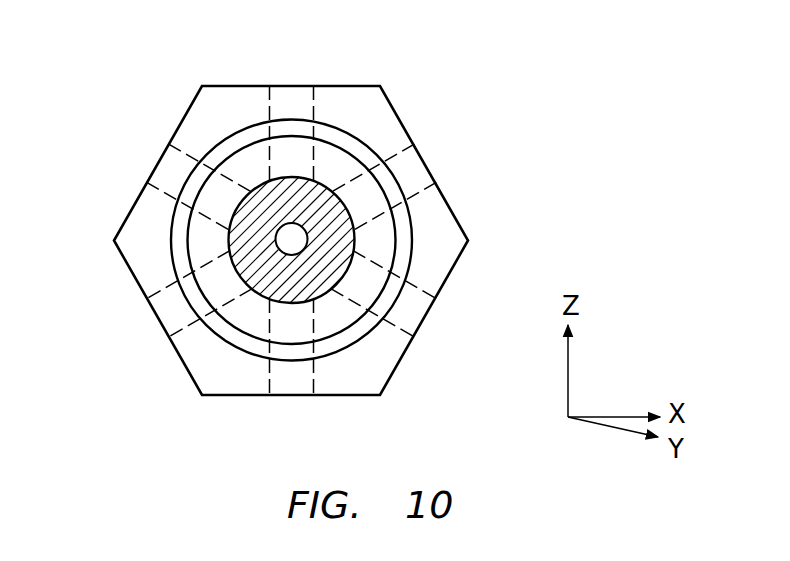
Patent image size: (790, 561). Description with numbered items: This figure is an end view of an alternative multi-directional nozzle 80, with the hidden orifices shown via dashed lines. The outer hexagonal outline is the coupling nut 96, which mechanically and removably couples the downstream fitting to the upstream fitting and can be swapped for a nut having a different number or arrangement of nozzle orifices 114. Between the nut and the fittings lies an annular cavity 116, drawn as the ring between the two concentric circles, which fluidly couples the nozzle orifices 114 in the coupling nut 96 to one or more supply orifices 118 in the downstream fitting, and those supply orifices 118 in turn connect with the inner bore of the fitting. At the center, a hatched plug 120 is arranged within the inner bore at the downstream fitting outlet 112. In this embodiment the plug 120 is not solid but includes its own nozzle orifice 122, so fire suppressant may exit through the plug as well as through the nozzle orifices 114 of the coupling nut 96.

The multi-directional nozzle 80 is at (522, 112).
The coupling nut 96 is at (452, 241).
The downstream fitting outlet 112 is at (372, 192).
The nozzle orifices 114 is at (165, 152).
The cavity 116 is at (228, 337).
The supply orifices 118 is at (190, 211).
The plug 120 is at (252, 248).
The nozzle orifice 122 is at (292, 247).